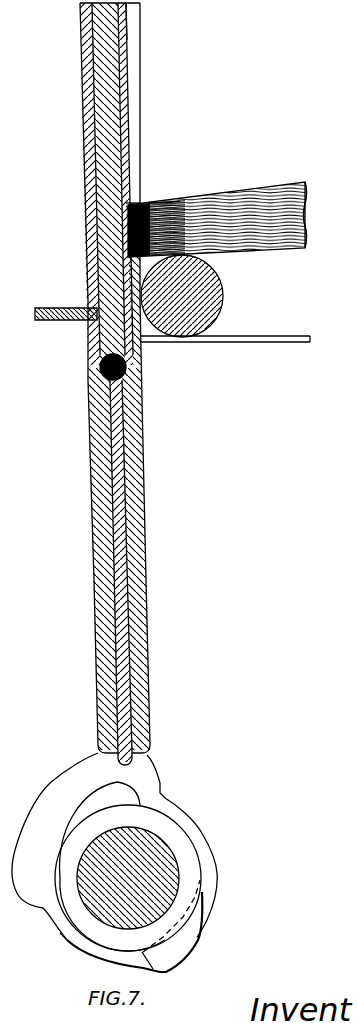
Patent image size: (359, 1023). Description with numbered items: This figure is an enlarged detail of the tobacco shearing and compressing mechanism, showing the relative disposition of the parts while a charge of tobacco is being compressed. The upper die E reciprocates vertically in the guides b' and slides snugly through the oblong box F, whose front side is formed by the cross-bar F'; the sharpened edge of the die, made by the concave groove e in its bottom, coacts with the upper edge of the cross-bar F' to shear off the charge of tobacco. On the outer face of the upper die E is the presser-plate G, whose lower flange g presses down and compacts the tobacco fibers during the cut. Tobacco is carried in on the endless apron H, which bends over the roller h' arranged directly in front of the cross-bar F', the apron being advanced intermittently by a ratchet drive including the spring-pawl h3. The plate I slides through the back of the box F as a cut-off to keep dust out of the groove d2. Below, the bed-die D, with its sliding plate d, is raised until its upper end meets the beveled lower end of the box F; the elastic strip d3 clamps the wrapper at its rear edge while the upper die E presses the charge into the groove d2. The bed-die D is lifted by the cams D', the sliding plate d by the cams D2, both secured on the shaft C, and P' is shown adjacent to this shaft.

The guides b' is at (146, 21).
The upper die E is at (108, 58).
The presser-plate G is at (132, 110).
The flange g is at (163, 203).
The spring-pawl h3 is at (172, 203).
The endless apron H is at (305, 250).
The box F is at (97, 374).
The cross-bar F' is at (133, 284).
The plate I is at (56, 306).
The roller h' is at (225, 298).
The concave groove e is at (100, 359).
The strip d3 is at (100, 372).
The groove d2 is at (125, 367).
The bed-die D is at (130, 560).
The sliding plate d is at (120, 495).
The cams D' is at (114, 846).
The cams D2 is at (73, 941).
The plate P' is at (137, 879).
The shaft C is at (128, 878).